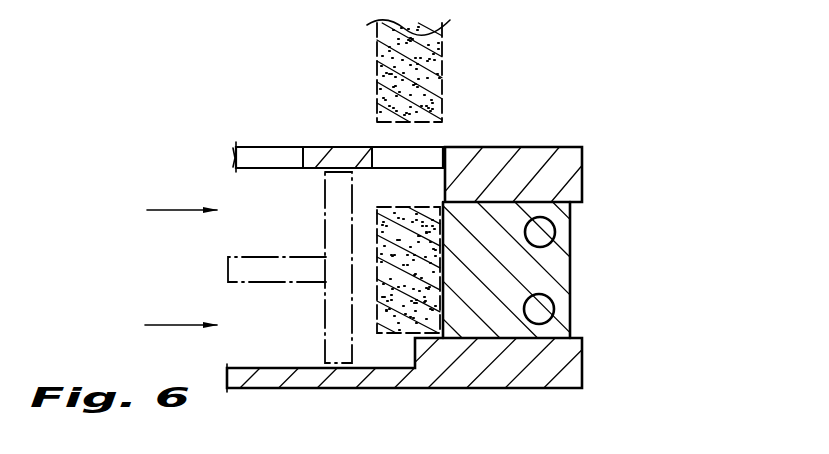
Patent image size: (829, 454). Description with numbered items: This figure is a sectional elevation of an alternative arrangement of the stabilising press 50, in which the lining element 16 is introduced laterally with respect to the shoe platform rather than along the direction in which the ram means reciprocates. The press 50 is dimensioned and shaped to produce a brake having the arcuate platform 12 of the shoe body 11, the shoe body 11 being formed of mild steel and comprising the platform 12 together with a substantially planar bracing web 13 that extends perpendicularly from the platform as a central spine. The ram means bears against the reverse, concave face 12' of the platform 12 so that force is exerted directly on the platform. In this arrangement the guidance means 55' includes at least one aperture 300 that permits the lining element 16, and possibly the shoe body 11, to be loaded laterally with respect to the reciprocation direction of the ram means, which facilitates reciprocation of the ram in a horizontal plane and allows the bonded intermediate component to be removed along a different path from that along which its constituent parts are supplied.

The guidance means 55' is at (317, 117).
The aperture 300 is at (384, 154).
The lining element 16 is at (427, 78).
The shoe body 11 is at (311, 239).
The bracing web 13 is at (265, 287).
The platform 12 is at (346, 295).
The concave face of the platform 12' is at (314, 363).
The stabilising press 50 is at (596, 378).